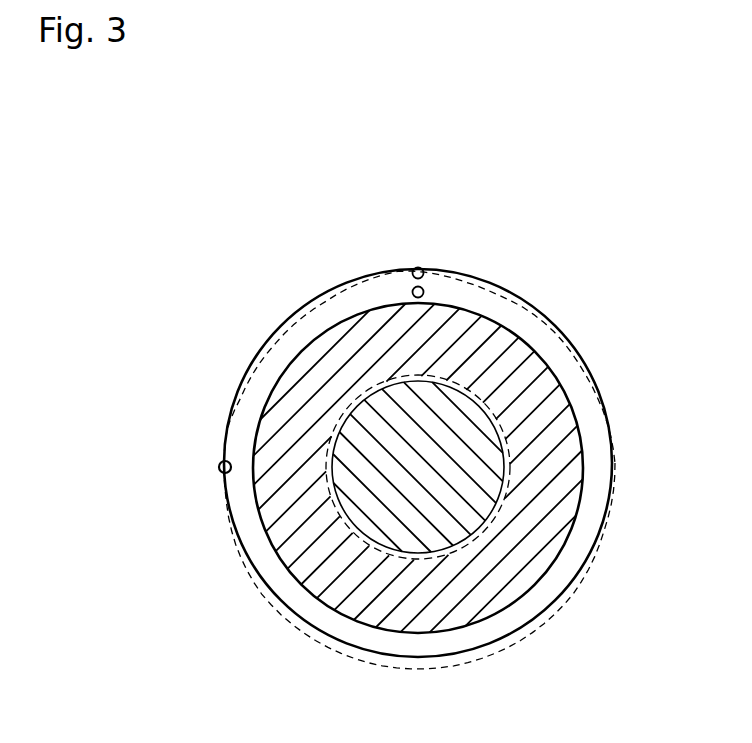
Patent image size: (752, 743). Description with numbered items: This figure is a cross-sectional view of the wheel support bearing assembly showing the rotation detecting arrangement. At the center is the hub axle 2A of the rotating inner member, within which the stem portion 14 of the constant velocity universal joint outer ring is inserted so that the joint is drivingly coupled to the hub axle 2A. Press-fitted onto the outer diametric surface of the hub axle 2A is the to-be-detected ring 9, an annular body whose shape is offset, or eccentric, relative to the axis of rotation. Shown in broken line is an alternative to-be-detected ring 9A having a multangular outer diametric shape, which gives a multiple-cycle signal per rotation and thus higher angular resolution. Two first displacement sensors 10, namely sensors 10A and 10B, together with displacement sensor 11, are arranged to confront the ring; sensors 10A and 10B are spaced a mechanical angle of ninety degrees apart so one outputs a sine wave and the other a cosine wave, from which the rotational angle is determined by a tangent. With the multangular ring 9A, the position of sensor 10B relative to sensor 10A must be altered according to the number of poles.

The to-be-detected ring 9 is at (543, 330).
The to-be-detected ring 9A is at (290, 623).
The hub axle 2A is at (547, 417).
The stem portion 14 is at (462, 488).
The first displacement sensor 10 is at (337, 190).
The first displacement sensor 10A is at (413, 269).
The first displacement sensor 10B is at (223, 462).
The displacement sensor 11 is at (424, 288).